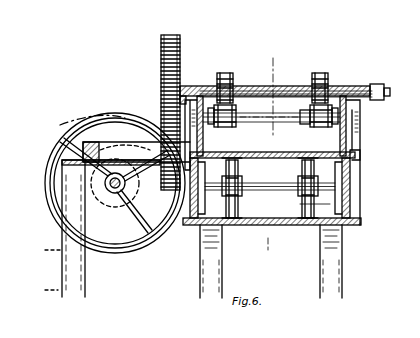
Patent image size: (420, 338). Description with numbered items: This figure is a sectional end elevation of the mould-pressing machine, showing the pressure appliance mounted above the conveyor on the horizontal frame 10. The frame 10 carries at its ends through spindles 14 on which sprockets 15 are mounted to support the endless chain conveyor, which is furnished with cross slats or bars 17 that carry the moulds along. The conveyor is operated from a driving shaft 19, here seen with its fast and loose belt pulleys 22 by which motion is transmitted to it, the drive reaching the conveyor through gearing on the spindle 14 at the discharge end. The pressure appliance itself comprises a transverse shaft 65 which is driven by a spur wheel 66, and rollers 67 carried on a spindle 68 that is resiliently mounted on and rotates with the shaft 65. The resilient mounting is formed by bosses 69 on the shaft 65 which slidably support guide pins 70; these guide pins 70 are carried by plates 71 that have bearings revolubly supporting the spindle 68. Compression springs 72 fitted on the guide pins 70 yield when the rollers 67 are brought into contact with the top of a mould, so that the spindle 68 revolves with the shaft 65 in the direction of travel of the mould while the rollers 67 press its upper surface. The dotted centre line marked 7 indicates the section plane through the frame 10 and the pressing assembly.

The frame 7 is at (267, 160).
The horizontal frame 10 is at (360, 190).
The through spindle 14 is at (290, 183).
The sprocket 15 is at (300, 204).
The cross slat 17 is at (242, 160).
The driving shaft 19 is at (138, 235).
The fast and loose belt pulleys 22 is at (106, 250).
The transverse shaft 65 is at (248, 90).
The spur wheel 66 is at (161, 70).
The roller 67 is at (218, 127).
The spindle 68 is at (250, 122).
The boss 69 is at (216, 94).
The guide pin 70 is at (222, 73).
The plate 71 is at (302, 122).
The compression spring 72 is at (306, 95).